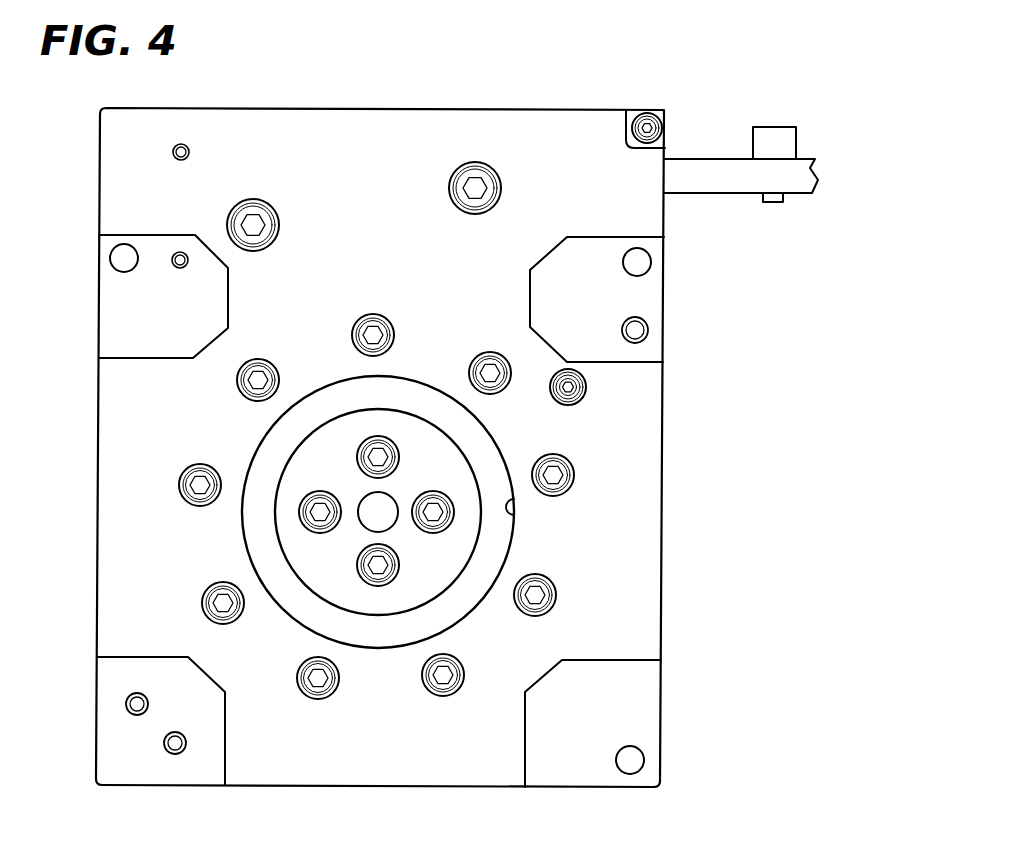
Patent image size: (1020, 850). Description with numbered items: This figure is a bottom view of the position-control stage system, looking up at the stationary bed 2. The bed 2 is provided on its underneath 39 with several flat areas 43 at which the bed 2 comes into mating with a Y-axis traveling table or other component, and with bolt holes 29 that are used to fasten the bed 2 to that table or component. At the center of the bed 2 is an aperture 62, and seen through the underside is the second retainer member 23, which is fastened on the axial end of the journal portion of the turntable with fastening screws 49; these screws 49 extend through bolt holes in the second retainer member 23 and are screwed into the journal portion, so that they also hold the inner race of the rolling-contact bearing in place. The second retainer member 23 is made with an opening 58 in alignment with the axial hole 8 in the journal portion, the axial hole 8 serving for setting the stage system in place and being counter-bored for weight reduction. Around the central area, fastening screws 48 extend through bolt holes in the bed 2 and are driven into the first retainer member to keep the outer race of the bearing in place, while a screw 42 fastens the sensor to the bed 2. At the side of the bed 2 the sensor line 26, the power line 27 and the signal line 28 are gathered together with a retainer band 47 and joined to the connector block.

The stationary bed 2 is at (300, 172).
The axial hole 8 is at (538, 478).
The second retainer member 23 is at (320, 545).
The sensor line 26 is at (741, 162).
The power line 27 is at (741, 162).
The signal line 28 is at (741, 162).
The bolt holes 29 is at (121, 259).
The underneath 39 is at (381, 235).
The screw 42 is at (248, 222).
The flat areas 43 is at (613, 305).
The retainer band 47 is at (766, 149).
The fastening screws 48 is at (258, 380).
The fastening screws 49 is at (327, 520).
The opening 58 is at (397, 500).
The aperture 62 is at (514, 515).